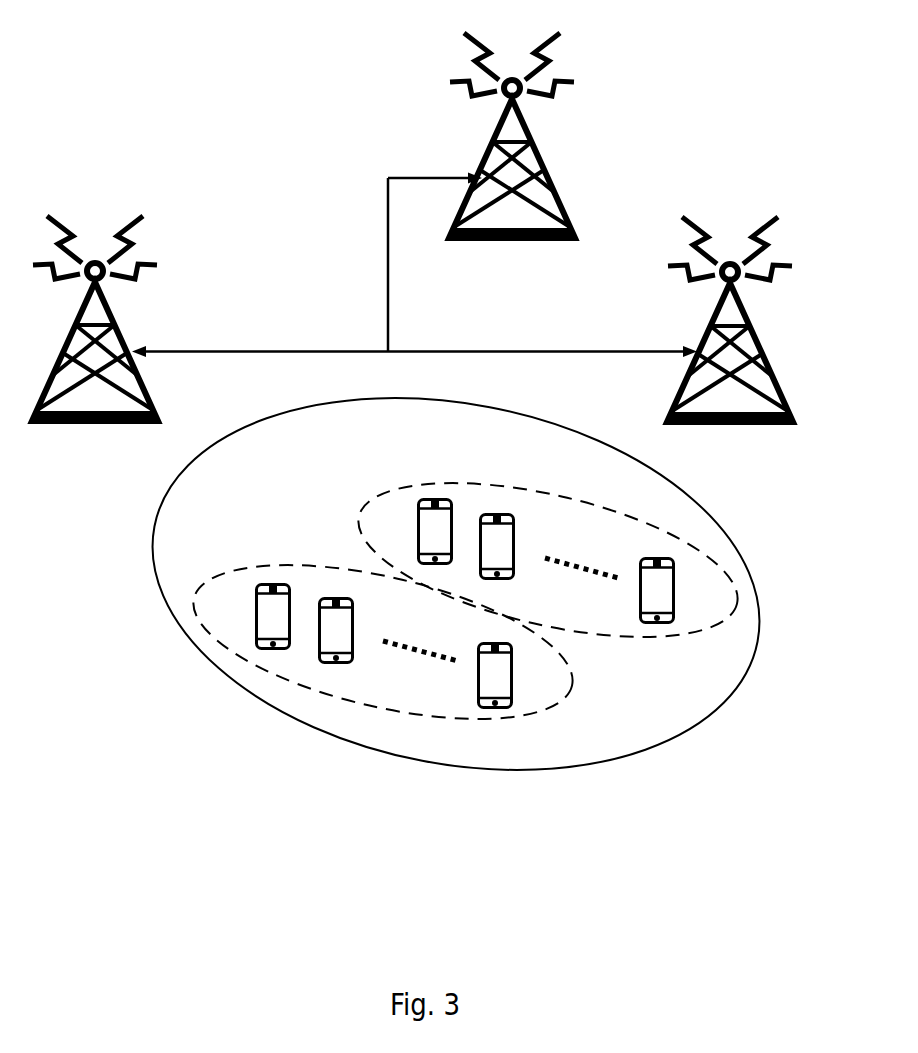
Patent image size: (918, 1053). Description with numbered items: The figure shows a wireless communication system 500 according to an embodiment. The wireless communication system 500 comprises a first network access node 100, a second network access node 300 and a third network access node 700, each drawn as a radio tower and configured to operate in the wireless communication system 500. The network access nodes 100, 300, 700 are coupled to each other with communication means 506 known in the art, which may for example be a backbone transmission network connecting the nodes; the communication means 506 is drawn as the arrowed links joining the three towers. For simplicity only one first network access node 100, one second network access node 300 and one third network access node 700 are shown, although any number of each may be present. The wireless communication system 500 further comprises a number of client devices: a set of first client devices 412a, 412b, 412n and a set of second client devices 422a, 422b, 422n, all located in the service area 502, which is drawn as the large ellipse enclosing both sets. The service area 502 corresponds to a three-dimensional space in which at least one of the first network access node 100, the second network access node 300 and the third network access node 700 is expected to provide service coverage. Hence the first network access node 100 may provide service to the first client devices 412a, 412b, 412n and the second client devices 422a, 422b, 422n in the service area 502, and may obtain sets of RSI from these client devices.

The wireless communication system 500 is at (118, 42).
The first network access node 100 is at (72, 422).
The second network access node 300 is at (723, 422).
The third network access node 700 is at (558, 194).
The communication means 506 is at (263, 351).
The service area 502 is at (500, 768).
The first client device 412a is at (228, 645).
The first client device 412b is at (282, 695).
The first client device 412n is at (419, 715).
The second client device 422a is at (524, 548).
The second client device 422b is at (446, 504).
The second client device 422n is at (583, 526).